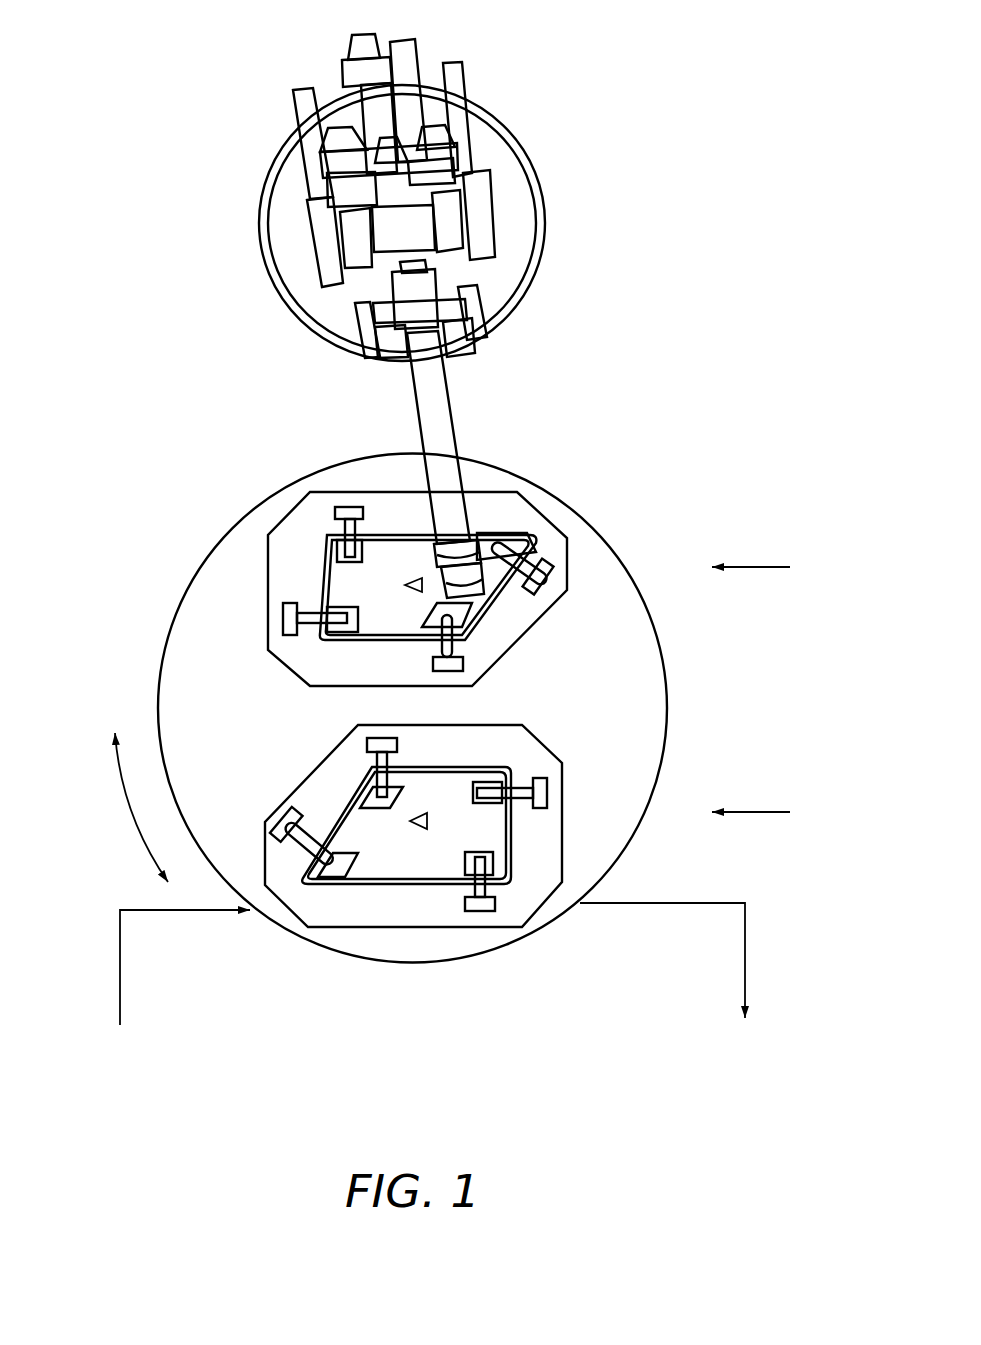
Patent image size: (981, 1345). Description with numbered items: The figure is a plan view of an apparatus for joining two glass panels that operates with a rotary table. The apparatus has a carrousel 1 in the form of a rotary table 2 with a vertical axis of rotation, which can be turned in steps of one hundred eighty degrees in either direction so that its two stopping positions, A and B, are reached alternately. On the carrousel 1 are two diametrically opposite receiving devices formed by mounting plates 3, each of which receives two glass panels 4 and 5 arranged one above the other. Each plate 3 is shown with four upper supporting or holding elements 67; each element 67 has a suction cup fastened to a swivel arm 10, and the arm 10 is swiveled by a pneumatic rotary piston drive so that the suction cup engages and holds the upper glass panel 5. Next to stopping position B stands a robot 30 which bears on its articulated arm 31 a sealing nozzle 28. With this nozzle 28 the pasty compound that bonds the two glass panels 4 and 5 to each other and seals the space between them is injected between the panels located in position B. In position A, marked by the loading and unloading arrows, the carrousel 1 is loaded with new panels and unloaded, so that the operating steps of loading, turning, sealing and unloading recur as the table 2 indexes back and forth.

The carrousel 1 is at (192, 606).
The rotary table 2 is at (233, 528).
The mounting plate 3 is at (566, 592).
The glass panel 4 is at (322, 652).
The glass panel 5 is at (328, 578).
The swivel arm 10 is at (333, 525).
The sealing nozzle 28 is at (436, 576).
The robot 30 is at (525, 207).
The articulated arm 31 is at (444, 407).
The upper supporting or holding element 67 is at (353, 566).